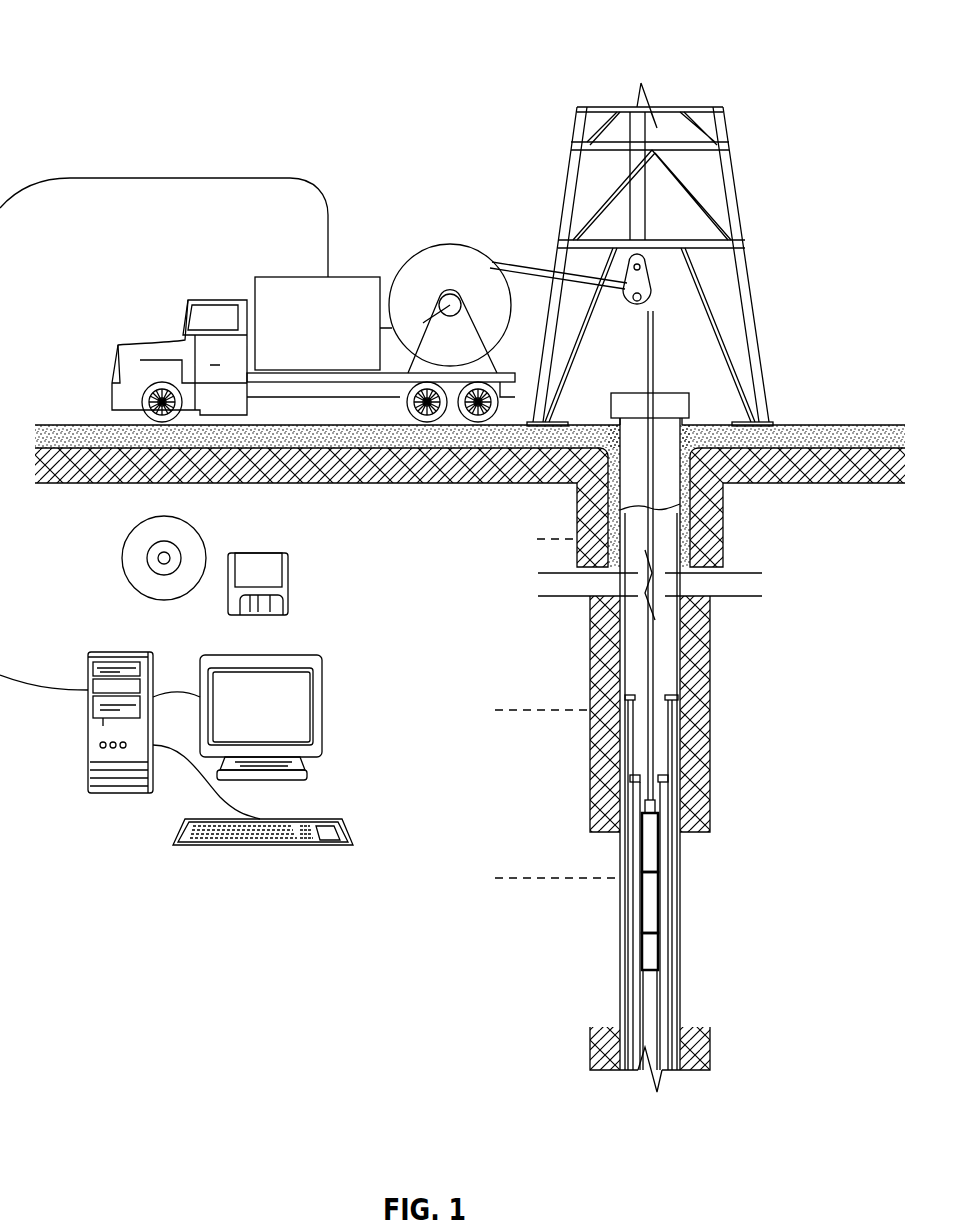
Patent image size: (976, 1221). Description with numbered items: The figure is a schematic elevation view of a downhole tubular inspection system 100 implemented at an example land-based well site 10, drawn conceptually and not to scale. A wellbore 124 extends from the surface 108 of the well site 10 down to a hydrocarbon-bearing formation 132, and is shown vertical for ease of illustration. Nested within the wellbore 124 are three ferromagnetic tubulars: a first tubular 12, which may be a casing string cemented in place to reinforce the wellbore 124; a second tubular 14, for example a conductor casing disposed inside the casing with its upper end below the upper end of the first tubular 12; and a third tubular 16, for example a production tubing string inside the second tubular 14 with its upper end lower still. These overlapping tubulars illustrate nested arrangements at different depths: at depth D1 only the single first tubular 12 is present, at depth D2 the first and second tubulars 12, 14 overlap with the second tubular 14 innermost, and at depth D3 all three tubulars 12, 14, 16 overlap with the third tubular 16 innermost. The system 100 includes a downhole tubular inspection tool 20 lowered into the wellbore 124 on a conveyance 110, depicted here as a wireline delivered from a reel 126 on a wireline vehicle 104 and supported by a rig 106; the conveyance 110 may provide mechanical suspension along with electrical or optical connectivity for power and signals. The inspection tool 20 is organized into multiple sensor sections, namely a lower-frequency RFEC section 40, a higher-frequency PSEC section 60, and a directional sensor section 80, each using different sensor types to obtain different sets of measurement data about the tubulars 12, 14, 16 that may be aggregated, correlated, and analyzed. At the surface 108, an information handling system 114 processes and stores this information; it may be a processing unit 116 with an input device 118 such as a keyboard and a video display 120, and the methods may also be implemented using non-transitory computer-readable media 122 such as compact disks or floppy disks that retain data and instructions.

The downhole tubular inspection system 100 is at (105, 33).
The well site 10 is at (432, 113).
The wireline vehicle 104 is at (295, 277).
The reel 126 is at (450, 244).
The rig 106 is at (733, 165).
The surface 108 is at (830, 422).
The wellbore 124 is at (668, 553).
The first tubular 12 is at (683, 607).
The second tubular 14 is at (672, 653).
The hydrocarbon-bearing formation 132 is at (850, 676).
The conveyance 110 is at (640, 668).
The downhole tubular inspection tool 20 is at (606, 916).
The third tubular 16 is at (663, 803).
The directional sensor section 80 is at (648, 830).
The higher-frequency PSEC section 60 is at (652, 887).
The lower-frequency RFEC section 40 is at (653, 955).
The depth D1 is at (537, 539).
The depth D2 is at (516, 710).
The depth D3 is at (516, 878).
The non-transitory computer-readable media 122 is at (198, 532).
The information handling system 114 is at (122, 874).
The processing unit 116 is at (115, 652).
The video display 120 is at (322, 690).
The input device 118 is at (345, 826).